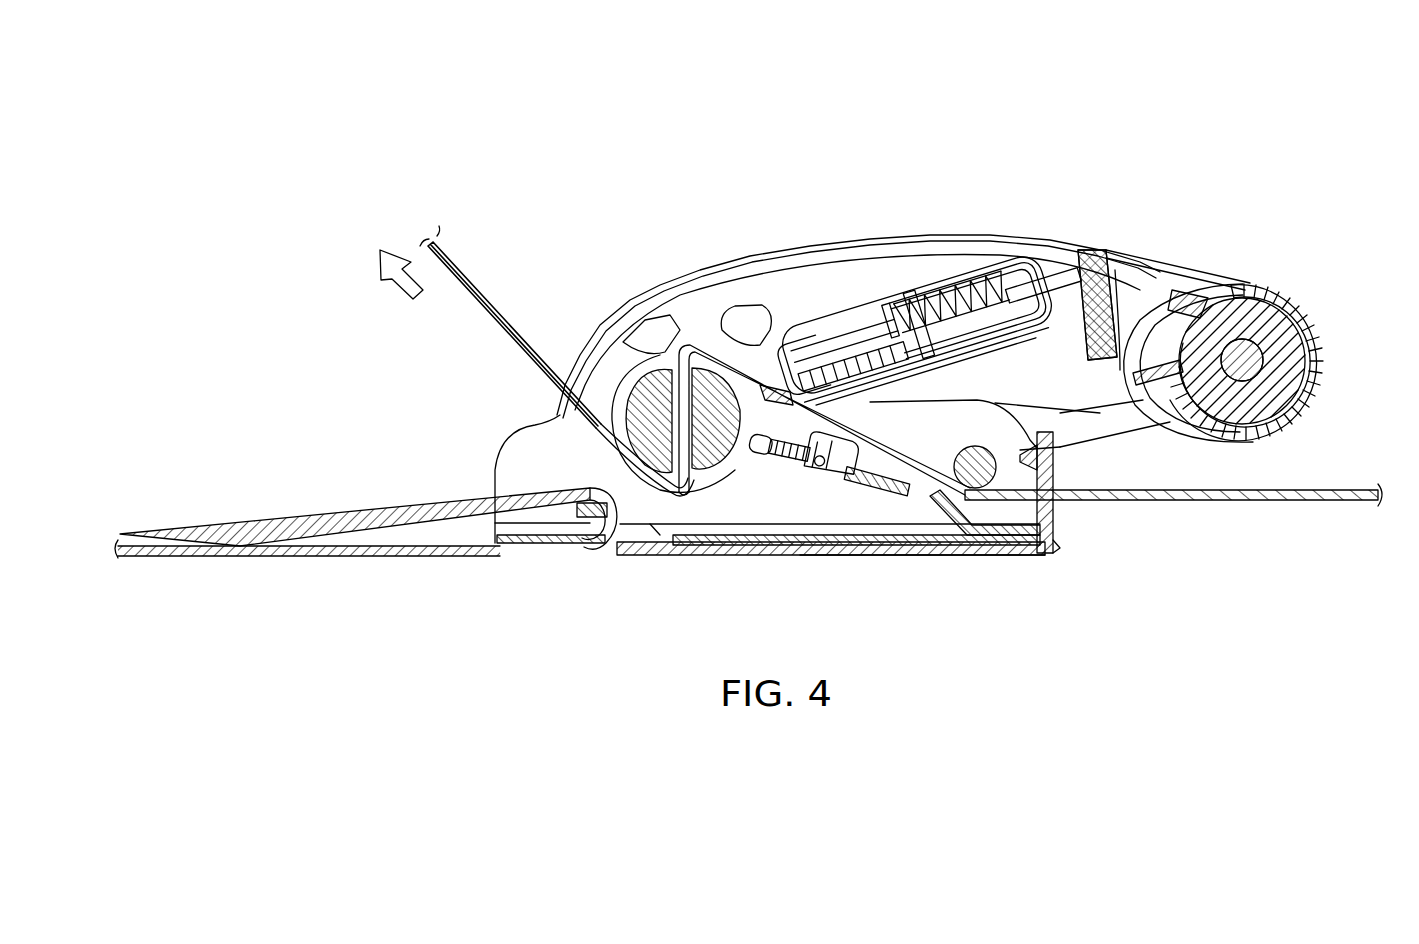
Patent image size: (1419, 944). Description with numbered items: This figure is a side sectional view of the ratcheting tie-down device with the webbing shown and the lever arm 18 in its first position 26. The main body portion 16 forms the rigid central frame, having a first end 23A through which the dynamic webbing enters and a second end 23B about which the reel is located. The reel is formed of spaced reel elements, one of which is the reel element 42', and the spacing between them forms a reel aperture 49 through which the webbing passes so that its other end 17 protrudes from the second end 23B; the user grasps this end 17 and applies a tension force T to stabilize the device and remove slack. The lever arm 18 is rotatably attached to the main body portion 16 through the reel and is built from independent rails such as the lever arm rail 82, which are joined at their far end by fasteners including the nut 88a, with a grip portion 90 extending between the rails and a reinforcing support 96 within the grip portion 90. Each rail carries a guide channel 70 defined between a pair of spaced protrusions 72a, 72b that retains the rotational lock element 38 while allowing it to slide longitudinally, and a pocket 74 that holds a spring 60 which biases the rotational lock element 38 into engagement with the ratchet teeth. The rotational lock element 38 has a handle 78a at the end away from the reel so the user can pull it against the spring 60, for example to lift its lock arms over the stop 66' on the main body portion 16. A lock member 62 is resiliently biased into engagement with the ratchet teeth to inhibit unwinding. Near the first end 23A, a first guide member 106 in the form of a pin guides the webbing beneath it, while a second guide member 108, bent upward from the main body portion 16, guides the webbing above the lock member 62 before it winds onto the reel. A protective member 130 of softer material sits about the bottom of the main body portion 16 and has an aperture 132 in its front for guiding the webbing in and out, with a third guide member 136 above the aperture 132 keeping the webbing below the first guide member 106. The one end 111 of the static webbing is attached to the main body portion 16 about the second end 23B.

The main body portion 16 is at (518, 454).
The other end of the dynamic webbing 17 is at (466, 280).
The lever arm 18 is at (1140, 236).
The first end 23A is at (1005, 568).
The second end 23B is at (495, 566).
The first position 26 is at (695, 156).
The rotational lock element 38 is at (1045, 272).
The reel element 42' is at (664, 424).
The reel aperture 49 is at (715, 452).
The spring 60 is at (980, 286).
The lock member 62 is at (853, 470).
The stop 66' is at (858, 326).
The guide channel 70 is at (876, 306).
The protrusion 72a is at (807, 349).
The protrusion 72b is at (852, 385).
The pocket 74 is at (1004, 252).
The handle 78a is at (1090, 252).
The lever arm rail 82 is at (1148, 284).
The nut 88a is at (1260, 381).
The grip portion 90 is at (1292, 308).
The reinforcing support 96 is at (1308, 344).
The first guide member 106 is at (970, 447).
The second guide member 108 is at (934, 507).
The one end of the static webbing 111 is at (405, 548).
The protective member 130 is at (1050, 548).
The aperture 132 is at (1068, 498).
The third guide member 136 is at (1053, 470).
The tension force T is at (398, 287).